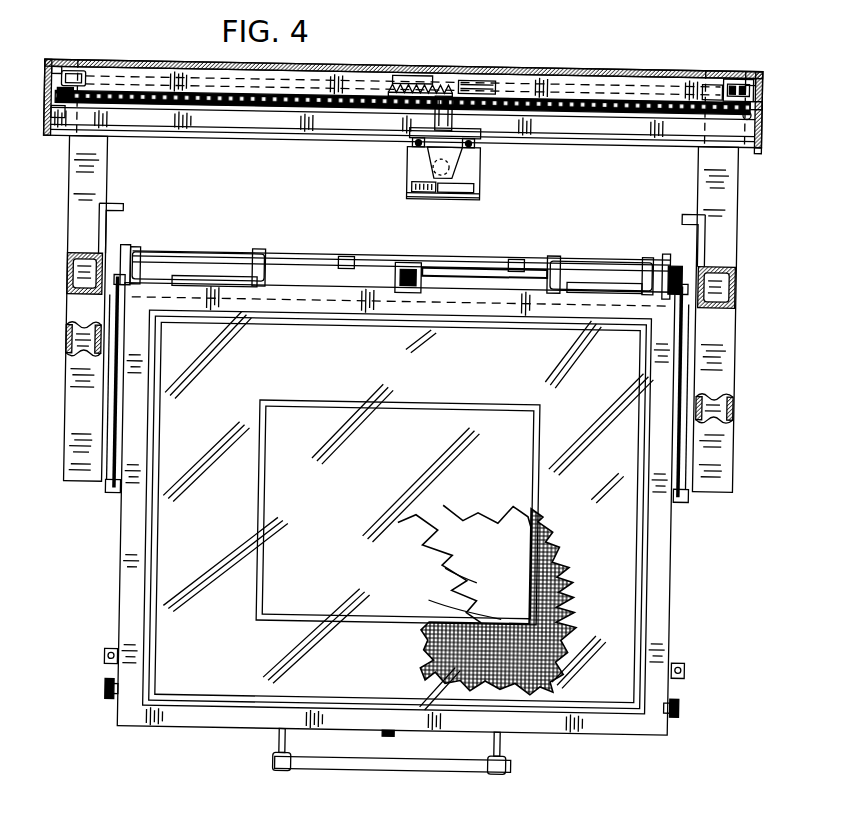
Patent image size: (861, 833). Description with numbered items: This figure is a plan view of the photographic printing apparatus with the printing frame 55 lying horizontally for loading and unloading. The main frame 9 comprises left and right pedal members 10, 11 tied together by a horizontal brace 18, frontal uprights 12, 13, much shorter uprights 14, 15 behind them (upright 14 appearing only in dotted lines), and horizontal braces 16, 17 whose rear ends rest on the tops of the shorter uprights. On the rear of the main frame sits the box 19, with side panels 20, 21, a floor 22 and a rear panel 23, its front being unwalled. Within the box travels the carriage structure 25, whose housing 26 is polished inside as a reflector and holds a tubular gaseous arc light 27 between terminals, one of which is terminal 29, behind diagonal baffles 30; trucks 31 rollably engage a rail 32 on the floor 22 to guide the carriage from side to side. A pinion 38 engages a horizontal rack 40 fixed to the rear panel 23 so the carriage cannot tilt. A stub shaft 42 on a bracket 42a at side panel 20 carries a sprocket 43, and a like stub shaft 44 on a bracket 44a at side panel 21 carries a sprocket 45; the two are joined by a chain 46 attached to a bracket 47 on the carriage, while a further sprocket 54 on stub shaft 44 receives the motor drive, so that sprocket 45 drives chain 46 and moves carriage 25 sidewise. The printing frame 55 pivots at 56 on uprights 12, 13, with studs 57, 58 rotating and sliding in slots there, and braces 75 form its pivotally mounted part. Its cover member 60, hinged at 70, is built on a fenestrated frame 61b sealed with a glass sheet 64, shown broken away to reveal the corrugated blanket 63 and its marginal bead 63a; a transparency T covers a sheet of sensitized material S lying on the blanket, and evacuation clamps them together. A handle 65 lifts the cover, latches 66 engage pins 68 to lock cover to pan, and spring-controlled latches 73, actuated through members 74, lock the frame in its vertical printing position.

The main frame 9 is at (373, 257).
The pedal member 10 is at (72, 396).
The pedal member 11 is at (716, 449).
The frontal upright 12 is at (68, 271).
The frontal upright 13 is at (735, 291).
The upright 14 is at (112, 60).
The upright 15 is at (706, 76).
The horizontal brace 16 is at (75, 200).
The horizontal brace 17 is at (726, 219).
The horizontal brace 18 is at (488, 275).
The box 19 is at (290, 141).
The side panel 20 is at (50, 117).
The side panel 21 is at (758, 151).
The floor 22 is at (546, 143).
The rear panel 23 is at (575, 68).
The carriage structure 25 is at (400, 161).
The housing 26 is at (477, 182).
The tubular gaseous arc light 27 is at (452, 160).
The terminal 29 is at (432, 173).
The baffle 30 is at (426, 193).
The truck 31 is at (458, 136).
The rail 32 is at (606, 141).
The pinion 38 is at (424, 75).
The rack 40 is at (470, 82).
The stub shaft 42 is at (52, 97).
The bracket 42a is at (48, 62).
The sprocket 43 is at (55, 82).
The stub shaft 44 is at (750, 116).
The bracket 44a is at (755, 73).
The sprocket 45 is at (762, 104).
The chain 46 is at (235, 103).
The bracket 47 is at (426, 110).
The sprocket 54 is at (740, 72).
The printing frame 55 is at (527, 288).
The pivot 56 is at (100, 300).
The stud 57 is at (115, 258).
The stud 58 is at (690, 262).
The cover member 60 is at (125, 580).
The rigid fenestrated rectangular frame 61b is at (666, 612).
The blanket 63 is at (566, 622).
The marginal bead 63a is at (640, 532).
The glass sheet 64 is at (582, 652).
The handle 65 is at (376, 766).
The latch 66 is at (112, 702).
The pin 68 is at (106, 690).
The hinge 70 is at (206, 270).
The spring-controlled latch 73 is at (342, 262).
The member 74 is at (406, 270).
The brace 75 is at (118, 442).
The transparency T is at (505, 590).
The sheet of sensitized material S is at (510, 620).